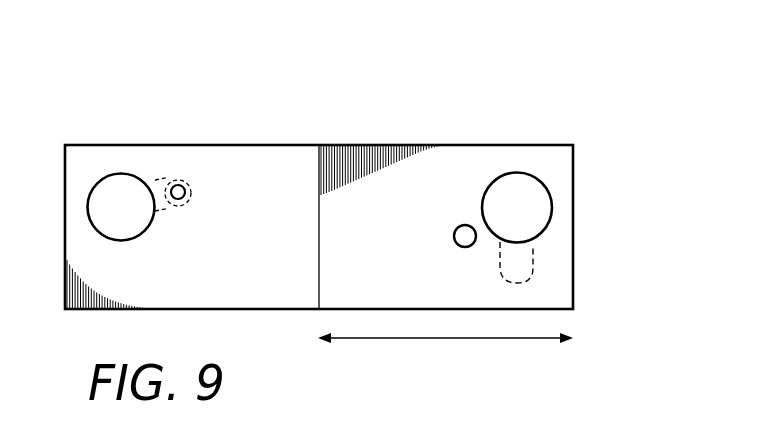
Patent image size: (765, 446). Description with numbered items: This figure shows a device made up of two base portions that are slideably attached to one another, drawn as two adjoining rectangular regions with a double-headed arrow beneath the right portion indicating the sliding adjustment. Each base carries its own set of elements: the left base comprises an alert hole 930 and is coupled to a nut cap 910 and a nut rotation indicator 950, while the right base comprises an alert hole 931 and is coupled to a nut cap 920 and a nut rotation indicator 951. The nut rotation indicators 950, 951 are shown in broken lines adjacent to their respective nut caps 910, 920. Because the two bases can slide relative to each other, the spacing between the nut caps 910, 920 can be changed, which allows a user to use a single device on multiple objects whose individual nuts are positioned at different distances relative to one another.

The nut cap 910 is at (93, 183).
The nut cap 920 is at (500, 177).
The alert hole 930 is at (177, 196).
The alert hole 931 is at (457, 233).
The nut rotation indicator 950 is at (197, 193).
The nut rotation indicator 951 is at (533, 272).